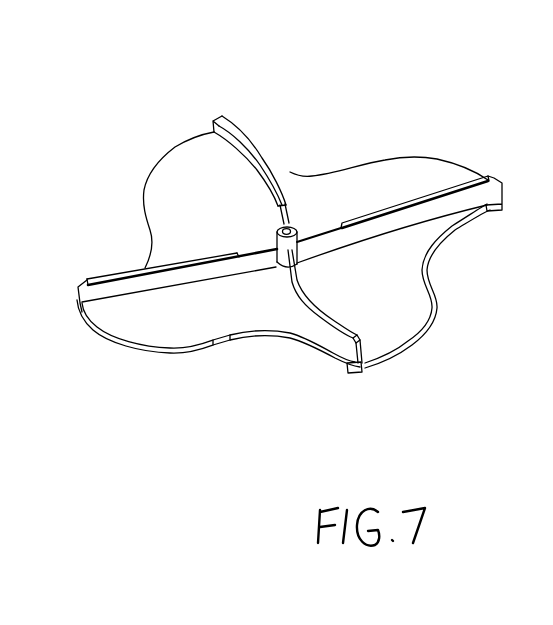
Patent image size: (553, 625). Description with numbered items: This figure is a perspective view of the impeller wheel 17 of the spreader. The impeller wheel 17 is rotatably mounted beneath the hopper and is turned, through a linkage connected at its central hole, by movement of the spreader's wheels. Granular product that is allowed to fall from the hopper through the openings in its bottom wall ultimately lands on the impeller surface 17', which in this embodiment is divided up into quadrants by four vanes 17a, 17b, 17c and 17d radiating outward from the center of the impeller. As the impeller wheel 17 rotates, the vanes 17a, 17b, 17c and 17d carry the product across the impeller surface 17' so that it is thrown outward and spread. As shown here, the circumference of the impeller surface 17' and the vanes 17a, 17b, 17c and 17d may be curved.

The impeller wheel 17 is at (313, 133).
The vane 17a is at (239, 128).
The vane 17b is at (450, 186).
The vane 17c is at (337, 339).
The vane 17d is at (113, 292).
The impeller surface 17' is at (283, 223).